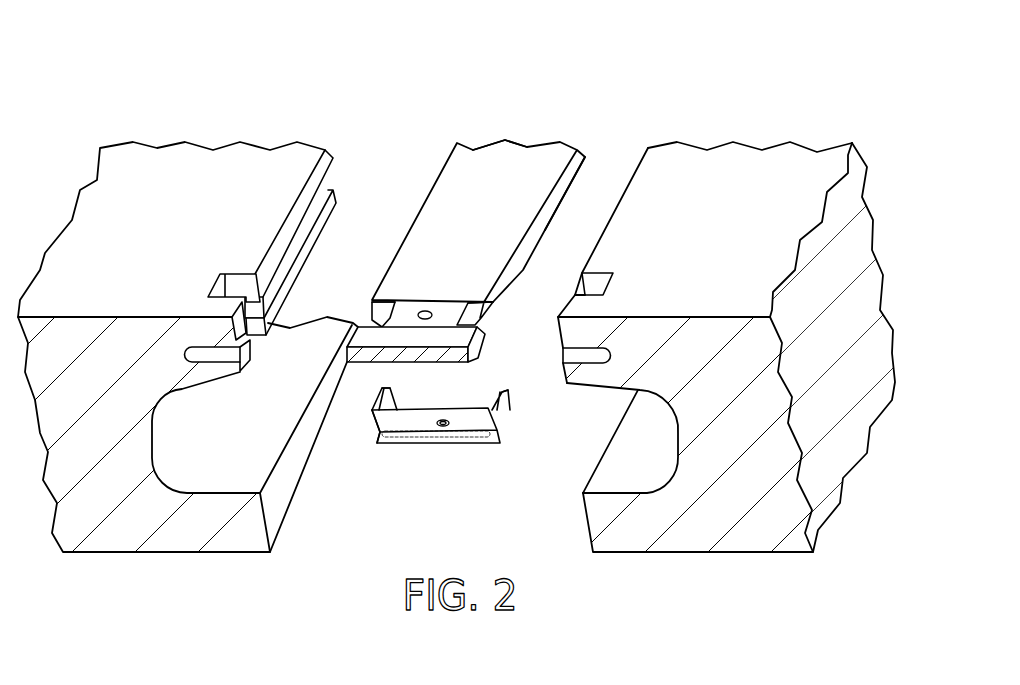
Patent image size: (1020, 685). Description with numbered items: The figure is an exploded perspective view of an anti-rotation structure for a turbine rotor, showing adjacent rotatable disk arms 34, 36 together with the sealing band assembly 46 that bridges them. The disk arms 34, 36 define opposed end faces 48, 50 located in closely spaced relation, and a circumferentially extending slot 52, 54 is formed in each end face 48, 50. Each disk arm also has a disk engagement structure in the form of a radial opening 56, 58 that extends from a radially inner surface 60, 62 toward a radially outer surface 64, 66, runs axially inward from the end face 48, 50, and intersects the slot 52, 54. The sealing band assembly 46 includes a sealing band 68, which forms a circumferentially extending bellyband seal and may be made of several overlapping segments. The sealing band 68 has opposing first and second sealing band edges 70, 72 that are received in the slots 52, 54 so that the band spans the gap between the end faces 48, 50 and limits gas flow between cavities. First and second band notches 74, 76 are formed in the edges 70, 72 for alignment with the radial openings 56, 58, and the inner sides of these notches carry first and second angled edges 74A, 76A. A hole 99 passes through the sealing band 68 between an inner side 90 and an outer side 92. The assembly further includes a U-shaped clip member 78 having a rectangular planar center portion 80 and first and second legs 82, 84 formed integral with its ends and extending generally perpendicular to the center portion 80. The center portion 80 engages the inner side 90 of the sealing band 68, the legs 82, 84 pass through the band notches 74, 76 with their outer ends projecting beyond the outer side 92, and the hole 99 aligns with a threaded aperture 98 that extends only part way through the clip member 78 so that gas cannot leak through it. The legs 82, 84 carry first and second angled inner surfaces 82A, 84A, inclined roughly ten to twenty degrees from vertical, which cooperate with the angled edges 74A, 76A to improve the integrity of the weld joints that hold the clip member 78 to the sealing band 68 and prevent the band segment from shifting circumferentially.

The disk arm 34 is at (225, 313).
The disk arm 36 is at (702, 323).
The sealing band assembly 46 is at (421, 467).
The end face 48 is at (327, 160).
The end face 50 is at (635, 160).
The slot 52 is at (333, 182).
The slot 54 is at (577, 357).
The disk notch or radial opening 56 is at (241, 275).
The disk notch or radial opening 58 is at (605, 272).
The radially inner surface 60 is at (216, 388).
The radially inner surface 62 is at (613, 393).
The radially outer surface 64 is at (213, 308).
The radially outer surface 66 is at (577, 298).
The sealing band 68 is at (469, 198).
The first sealing band edge 70 is at (443, 162).
The second sealing band edge 72 is at (563, 200).
The first band notch 74 is at (363, 323).
The first angled edge 74A is at (383, 296).
The second band notch 76 is at (483, 323).
The second angled edge 76A is at (481, 296).
The clip member 78 is at (510, 452).
The center portion 80 is at (393, 436).
The first leg 82 is at (373, 412).
The first angled inner surface 82A is at (395, 408).
The second leg 84 is at (508, 412).
The second angled inner surface 84A is at (478, 412).
The inner side 90 is at (433, 436).
The outer side 92 is at (515, 150).
The threaded aperture 98 is at (448, 428).
The hole 99 is at (425, 308).